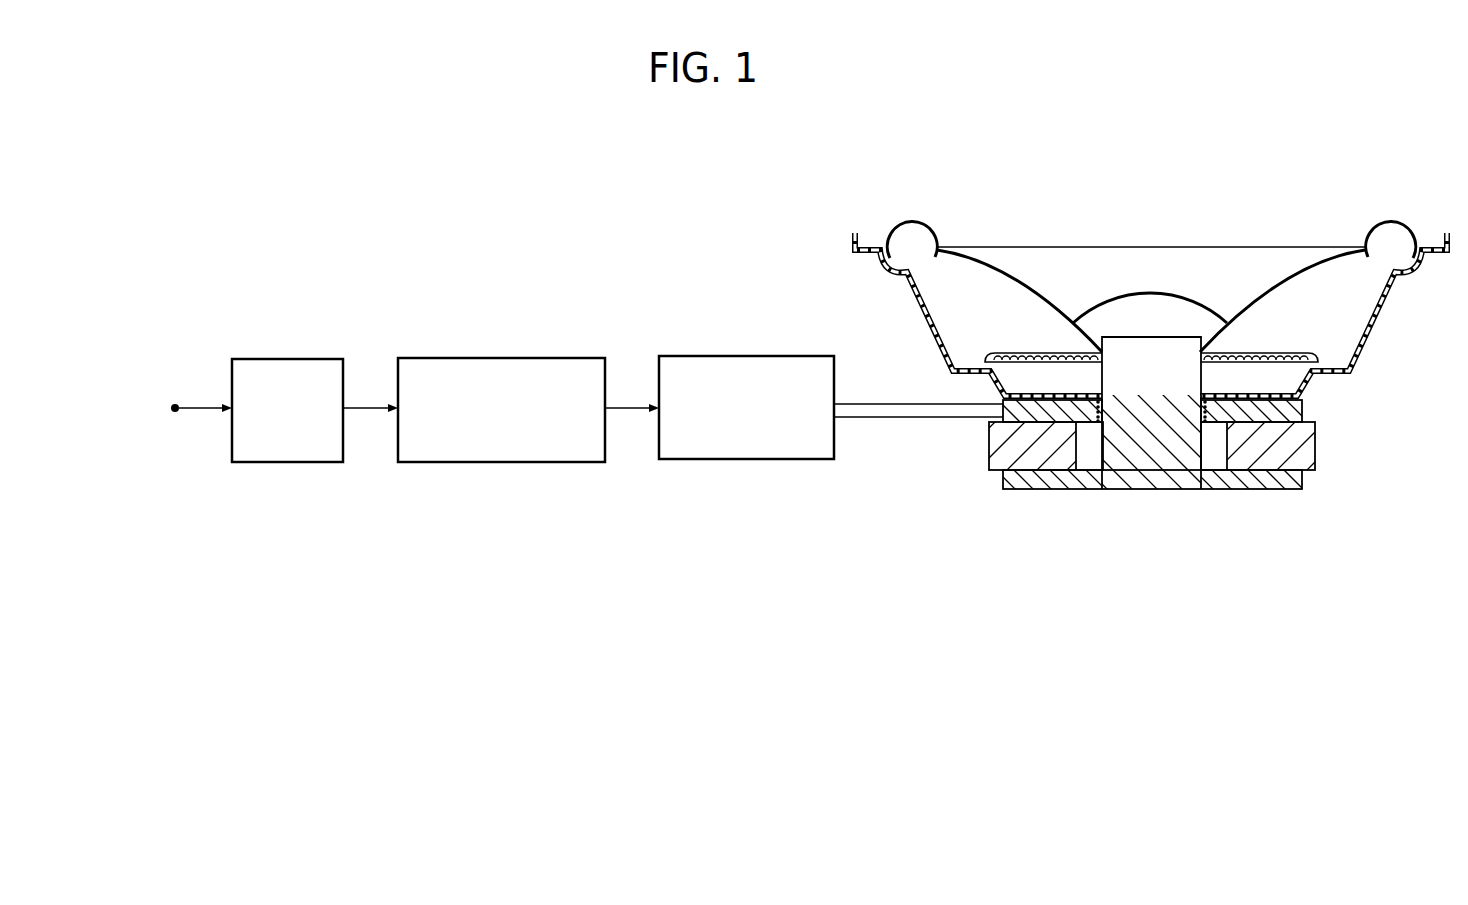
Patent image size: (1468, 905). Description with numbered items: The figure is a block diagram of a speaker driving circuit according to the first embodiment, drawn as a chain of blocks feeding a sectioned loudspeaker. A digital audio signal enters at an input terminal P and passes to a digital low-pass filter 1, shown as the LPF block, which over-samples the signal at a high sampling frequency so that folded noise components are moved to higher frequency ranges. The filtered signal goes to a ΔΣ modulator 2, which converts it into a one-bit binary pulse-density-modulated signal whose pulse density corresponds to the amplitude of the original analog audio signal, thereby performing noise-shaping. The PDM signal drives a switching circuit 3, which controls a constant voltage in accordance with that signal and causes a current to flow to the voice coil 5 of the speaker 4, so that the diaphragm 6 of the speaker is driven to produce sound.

The input terminal P is at (175, 406).
The digital low-pass filter 1 is at (300, 359).
The ΔΣ modulator 2 is at (532, 358).
The switching circuit 3 is at (768, 356).
The speaker 4 is at (1275, 220).
The voice coil 5 is at (1092, 427).
The diaphragm 6 is at (1015, 277).